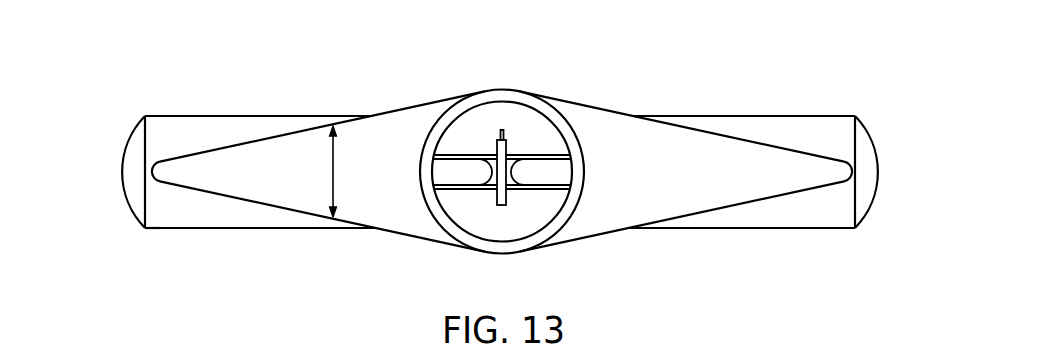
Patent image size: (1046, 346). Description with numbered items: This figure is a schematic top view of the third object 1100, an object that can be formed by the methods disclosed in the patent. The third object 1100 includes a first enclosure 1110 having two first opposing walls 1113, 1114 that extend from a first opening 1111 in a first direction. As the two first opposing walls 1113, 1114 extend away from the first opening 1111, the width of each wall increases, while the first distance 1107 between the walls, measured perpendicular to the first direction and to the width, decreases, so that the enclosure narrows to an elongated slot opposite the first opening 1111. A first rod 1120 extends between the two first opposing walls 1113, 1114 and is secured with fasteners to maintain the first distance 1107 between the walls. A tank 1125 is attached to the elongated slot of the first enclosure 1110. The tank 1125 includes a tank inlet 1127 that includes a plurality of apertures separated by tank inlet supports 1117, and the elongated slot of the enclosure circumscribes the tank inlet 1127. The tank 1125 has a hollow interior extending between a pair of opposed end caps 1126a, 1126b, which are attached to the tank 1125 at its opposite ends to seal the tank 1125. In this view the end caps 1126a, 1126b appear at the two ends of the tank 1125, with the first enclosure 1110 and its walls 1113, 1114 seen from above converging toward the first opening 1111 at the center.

The third object 1100 is at (803, 81).
The first enclosure 1110 is at (690, 142).
The first opening 1111 is at (502, 253).
The first opposing wall 1113 is at (313, 228).
The first opposing wall 1114 is at (292, 133).
The first distance 1107 is at (340, 172).
The tank inlet support 1117 is at (490, 157).
The first rod 1120 is at (503, 130).
The tank 1125 is at (167, 228).
The end cap 1126a is at (138, 143).
The end cap 1126b is at (866, 143).
The tank inlet 1127 is at (540, 173).